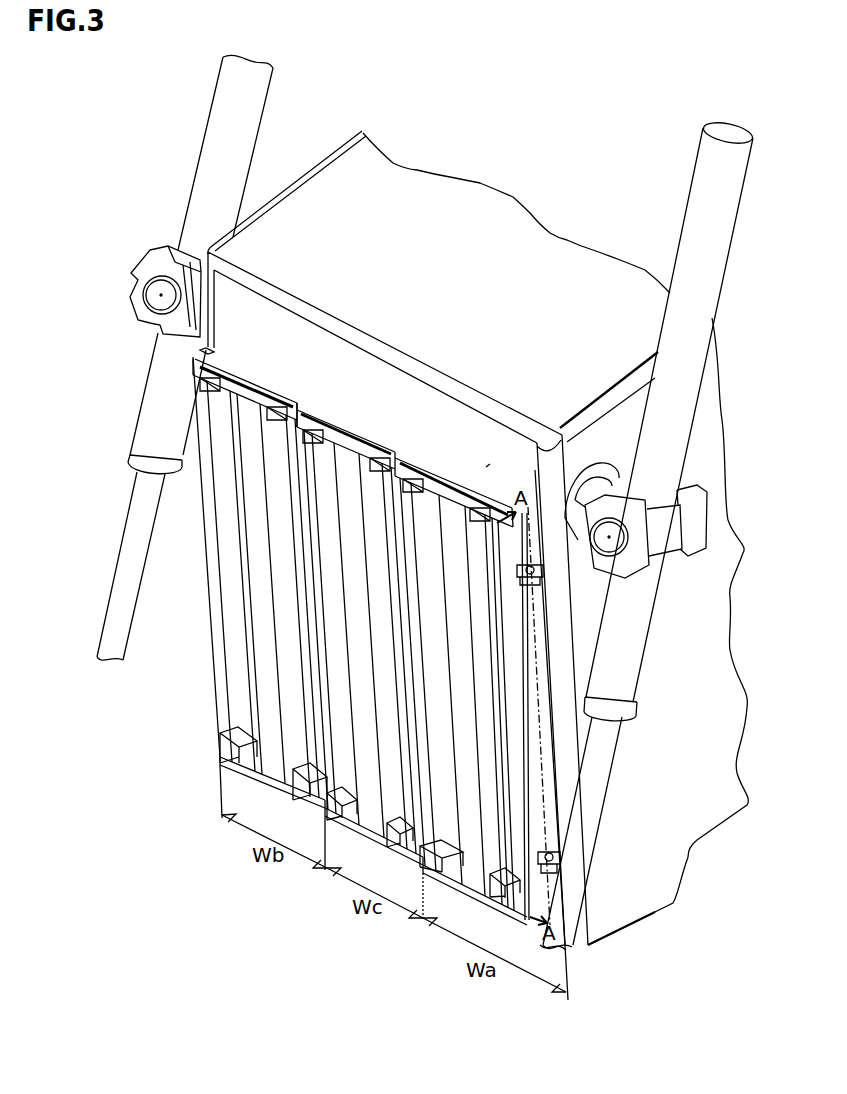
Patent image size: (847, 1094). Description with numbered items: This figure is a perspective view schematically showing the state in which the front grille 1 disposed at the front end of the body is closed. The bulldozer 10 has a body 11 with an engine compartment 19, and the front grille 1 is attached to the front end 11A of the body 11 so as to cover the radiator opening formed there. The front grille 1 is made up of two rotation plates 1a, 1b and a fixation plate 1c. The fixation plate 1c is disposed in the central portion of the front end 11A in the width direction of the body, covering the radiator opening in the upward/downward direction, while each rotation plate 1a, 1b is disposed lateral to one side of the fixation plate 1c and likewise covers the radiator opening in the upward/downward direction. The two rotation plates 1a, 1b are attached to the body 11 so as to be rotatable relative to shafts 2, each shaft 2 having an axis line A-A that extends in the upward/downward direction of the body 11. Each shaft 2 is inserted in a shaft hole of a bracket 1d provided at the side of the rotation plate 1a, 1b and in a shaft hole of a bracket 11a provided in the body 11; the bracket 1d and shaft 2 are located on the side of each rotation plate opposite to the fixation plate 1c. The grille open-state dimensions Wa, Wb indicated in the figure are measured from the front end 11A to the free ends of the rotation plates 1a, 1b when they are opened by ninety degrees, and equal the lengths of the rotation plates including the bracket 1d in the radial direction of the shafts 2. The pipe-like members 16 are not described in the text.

The front grille 1 is at (377, 532).
The rotation plate 1a is at (438, 490).
The rotation plate 1b is at (200, 352).
The fixation plate 1c is at (338, 442).
The bracket 1d is at (633, 350).
The shaft 2 is at (537, 565).
The bulldozer 10 is at (565, 121).
The body 11 is at (446, 220).
The front end 11A is at (486, 467).
The bracket 11a is at (543, 575).
The support pipe 16 is at (228, 113).
The engine compartment 19 is at (343, 212).